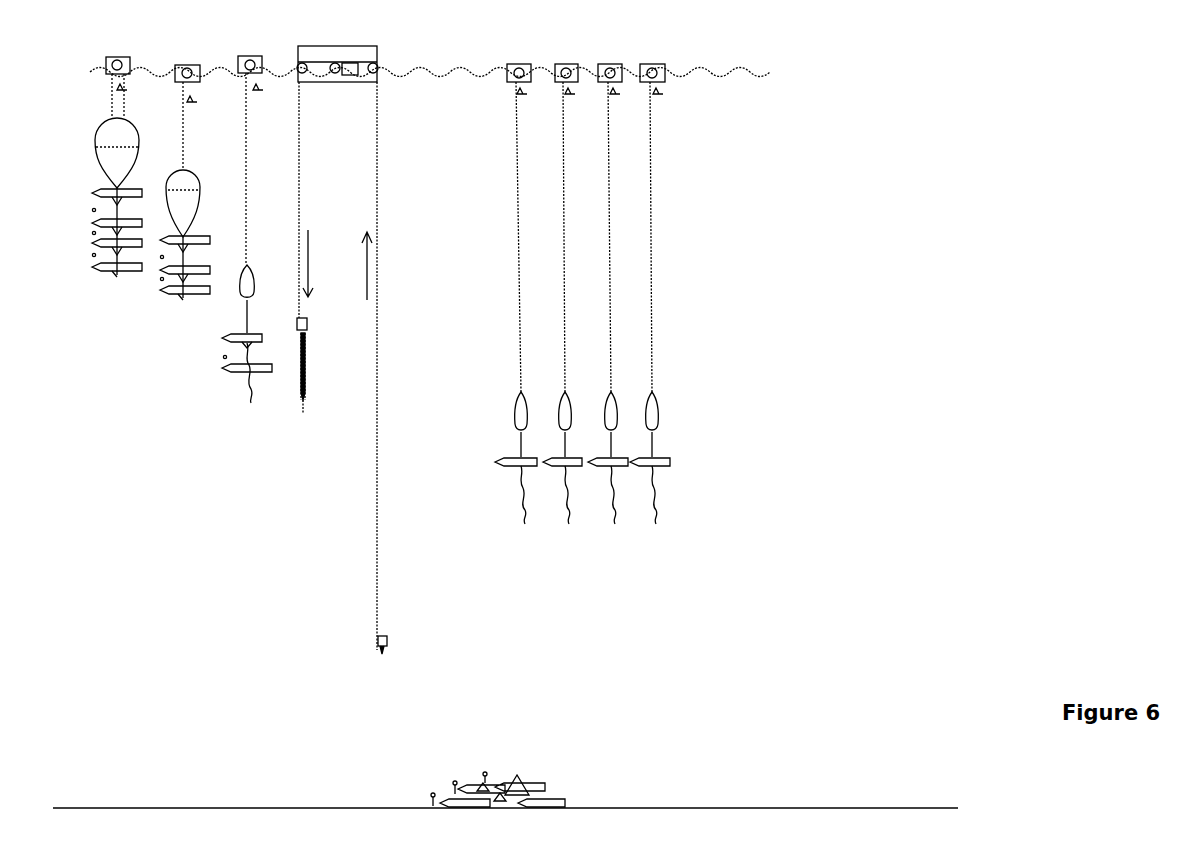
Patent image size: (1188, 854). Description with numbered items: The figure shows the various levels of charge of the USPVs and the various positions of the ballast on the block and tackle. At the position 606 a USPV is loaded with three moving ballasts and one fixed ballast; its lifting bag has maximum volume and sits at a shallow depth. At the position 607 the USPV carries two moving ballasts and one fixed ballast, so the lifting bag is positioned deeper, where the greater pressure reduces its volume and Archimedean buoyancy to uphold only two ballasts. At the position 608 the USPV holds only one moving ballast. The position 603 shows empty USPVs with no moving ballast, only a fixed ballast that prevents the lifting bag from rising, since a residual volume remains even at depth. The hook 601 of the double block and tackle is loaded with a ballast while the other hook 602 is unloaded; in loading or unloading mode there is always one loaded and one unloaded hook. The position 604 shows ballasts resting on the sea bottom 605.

The hook 601 is at (310, 328).
The hook 602 is at (387, 640).
The position of empty USPV 603 is at (682, 536).
The position of ballasts on sea bottom 604 is at (545, 781).
The sea bottom 605 is at (332, 808).
The position of USPV with three moving ballasts 606 is at (112, 278).
The position of USPV with two moving ballasts 607 is at (185, 300).
The position of USPV with one moving ballast 608 is at (246, 405).